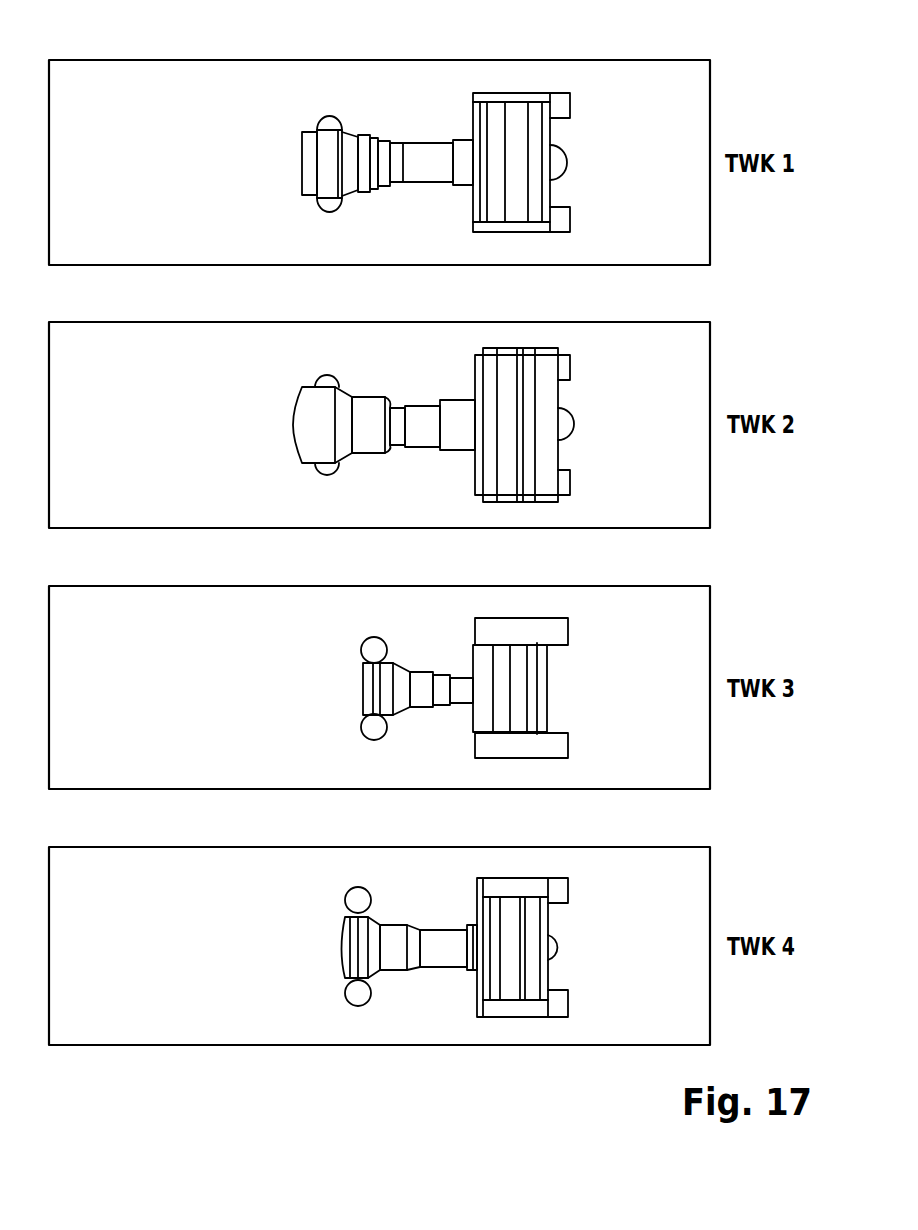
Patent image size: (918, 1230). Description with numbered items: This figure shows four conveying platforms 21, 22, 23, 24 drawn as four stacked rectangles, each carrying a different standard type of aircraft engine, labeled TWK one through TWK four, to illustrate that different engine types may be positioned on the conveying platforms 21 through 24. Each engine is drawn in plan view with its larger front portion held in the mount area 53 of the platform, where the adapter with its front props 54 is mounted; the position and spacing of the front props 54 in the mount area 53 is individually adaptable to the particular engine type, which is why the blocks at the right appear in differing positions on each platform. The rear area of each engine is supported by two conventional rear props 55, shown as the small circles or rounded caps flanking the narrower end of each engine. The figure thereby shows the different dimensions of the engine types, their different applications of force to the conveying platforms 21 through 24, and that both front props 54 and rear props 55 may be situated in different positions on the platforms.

The conveying platform 21 is at (379, 162).
The conveying platform 22 is at (379, 425).
The conveying platform 23 is at (379, 687).
The conveying platform 24 is at (244, 1049).
The mount area 53 is at (506, 92).
The front props 54 is at (551, 92).
The rear props 55 is at (321, 204).